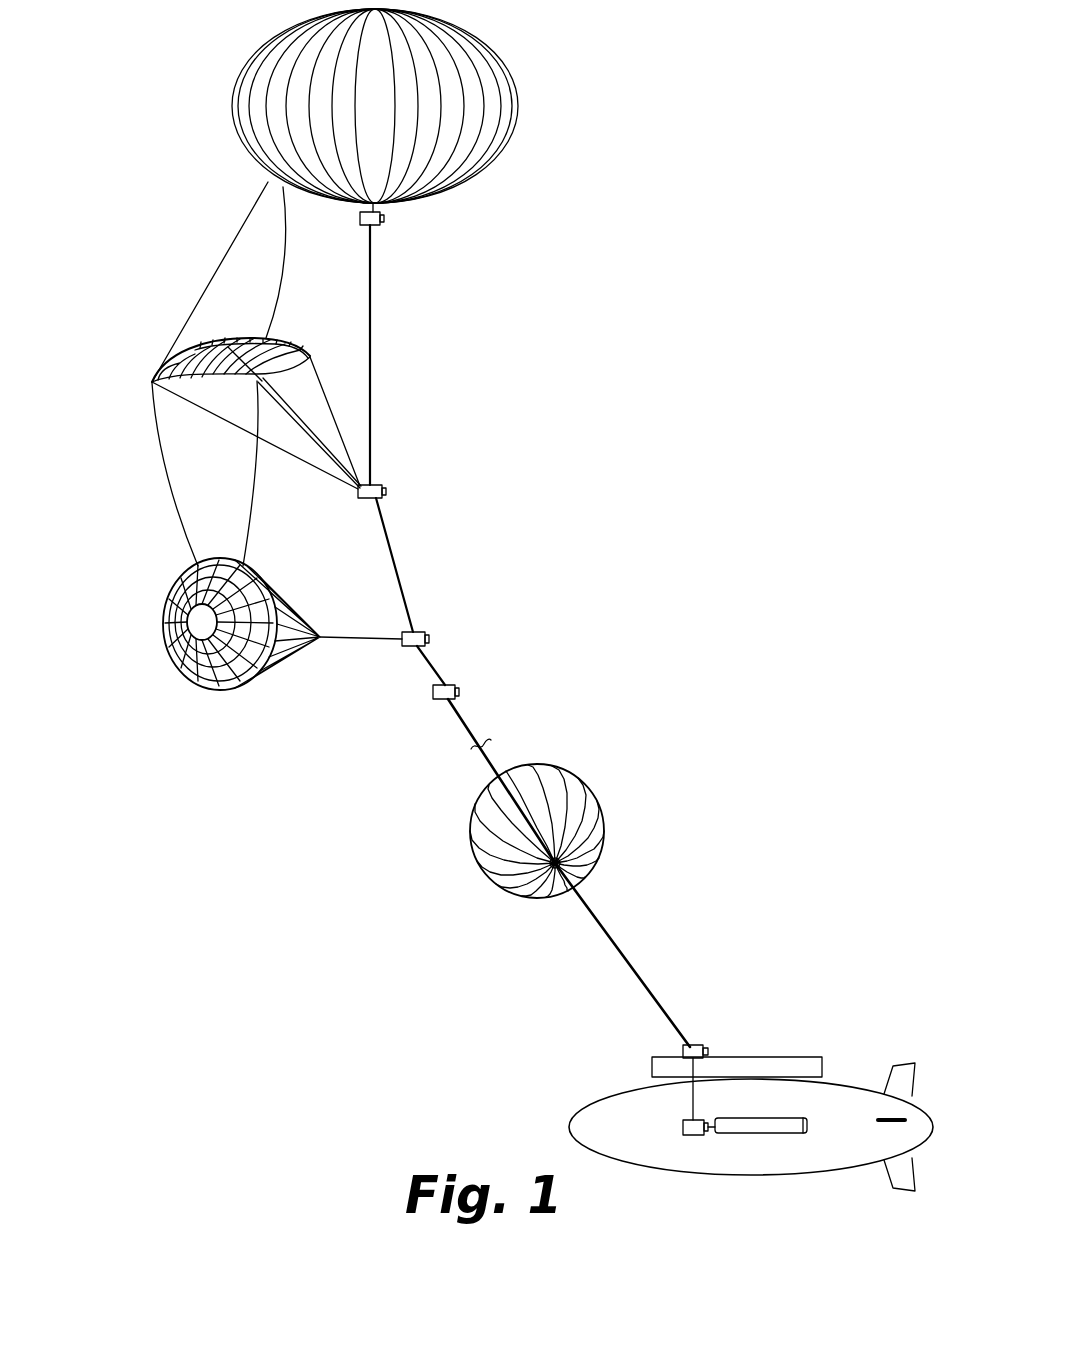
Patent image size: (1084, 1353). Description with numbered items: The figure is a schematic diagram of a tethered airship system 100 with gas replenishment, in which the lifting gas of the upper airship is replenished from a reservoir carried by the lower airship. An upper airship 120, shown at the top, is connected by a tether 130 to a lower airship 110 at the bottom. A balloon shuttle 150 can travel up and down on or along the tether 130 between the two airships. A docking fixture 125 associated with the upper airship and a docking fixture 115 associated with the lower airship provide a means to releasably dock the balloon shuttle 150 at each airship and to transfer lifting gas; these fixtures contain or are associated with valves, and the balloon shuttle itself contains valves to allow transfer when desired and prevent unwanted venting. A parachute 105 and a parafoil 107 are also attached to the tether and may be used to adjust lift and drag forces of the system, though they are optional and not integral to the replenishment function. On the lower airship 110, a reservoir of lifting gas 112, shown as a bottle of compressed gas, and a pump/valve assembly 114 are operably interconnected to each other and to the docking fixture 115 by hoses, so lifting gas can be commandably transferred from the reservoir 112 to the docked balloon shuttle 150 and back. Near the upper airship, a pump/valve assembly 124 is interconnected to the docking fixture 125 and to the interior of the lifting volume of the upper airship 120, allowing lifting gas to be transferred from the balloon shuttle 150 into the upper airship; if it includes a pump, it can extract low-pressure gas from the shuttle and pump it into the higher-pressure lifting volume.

The tethered airship system 100 is at (808, 90).
The upper airship 120 is at (510, 80).
The pump/valve assembly 124 is at (384, 218).
The parafoil 107 is at (150, 372).
The parachute 105 is at (173, 605).
The docking fixture 125 is at (459, 693).
The balloon shuttle 150 is at (587, 793).
The tether 130 is at (638, 992).
The docking fixture 115 is at (700, 1045).
The lower airship 110 is at (843, 1085).
The pump/valve assembly 114 is at (695, 1137).
The reservoir of lifting gas 112 is at (763, 1135).